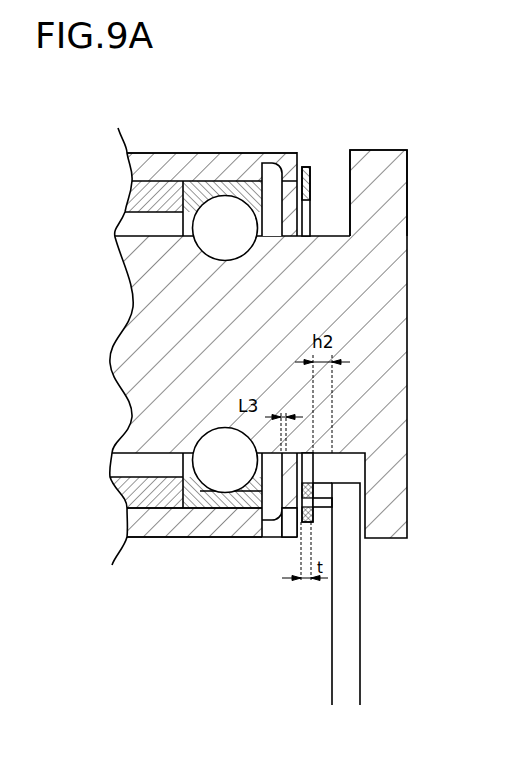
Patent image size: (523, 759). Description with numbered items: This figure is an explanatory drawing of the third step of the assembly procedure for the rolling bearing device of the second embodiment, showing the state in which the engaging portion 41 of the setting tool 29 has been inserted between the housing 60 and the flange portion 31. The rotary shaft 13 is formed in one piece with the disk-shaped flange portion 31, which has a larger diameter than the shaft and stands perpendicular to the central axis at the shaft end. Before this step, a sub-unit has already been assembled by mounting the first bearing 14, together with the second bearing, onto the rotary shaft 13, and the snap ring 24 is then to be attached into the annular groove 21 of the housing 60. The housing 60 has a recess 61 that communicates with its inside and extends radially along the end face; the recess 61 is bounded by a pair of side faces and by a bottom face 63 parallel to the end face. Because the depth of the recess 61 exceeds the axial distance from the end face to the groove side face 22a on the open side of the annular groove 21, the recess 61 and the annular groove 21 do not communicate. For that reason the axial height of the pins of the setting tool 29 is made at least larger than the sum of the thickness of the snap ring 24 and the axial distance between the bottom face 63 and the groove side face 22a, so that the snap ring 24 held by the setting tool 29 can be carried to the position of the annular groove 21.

The rotary shaft 13 is at (224, 345).
The housing 60 is at (172, 152).
The flange portion 31 is at (388, 150).
The groove side face 22a is at (266, 152).
The snap ring 24 is at (304, 166).
The first bearing 14 is at (209, 512).
The annular groove 21 is at (270, 519).
The recess 61 is at (287, 540).
The bottom face 63 is at (311, 514).
The engaging portion 41 is at (360, 600).
The setting tool 29 is at (411, 594).